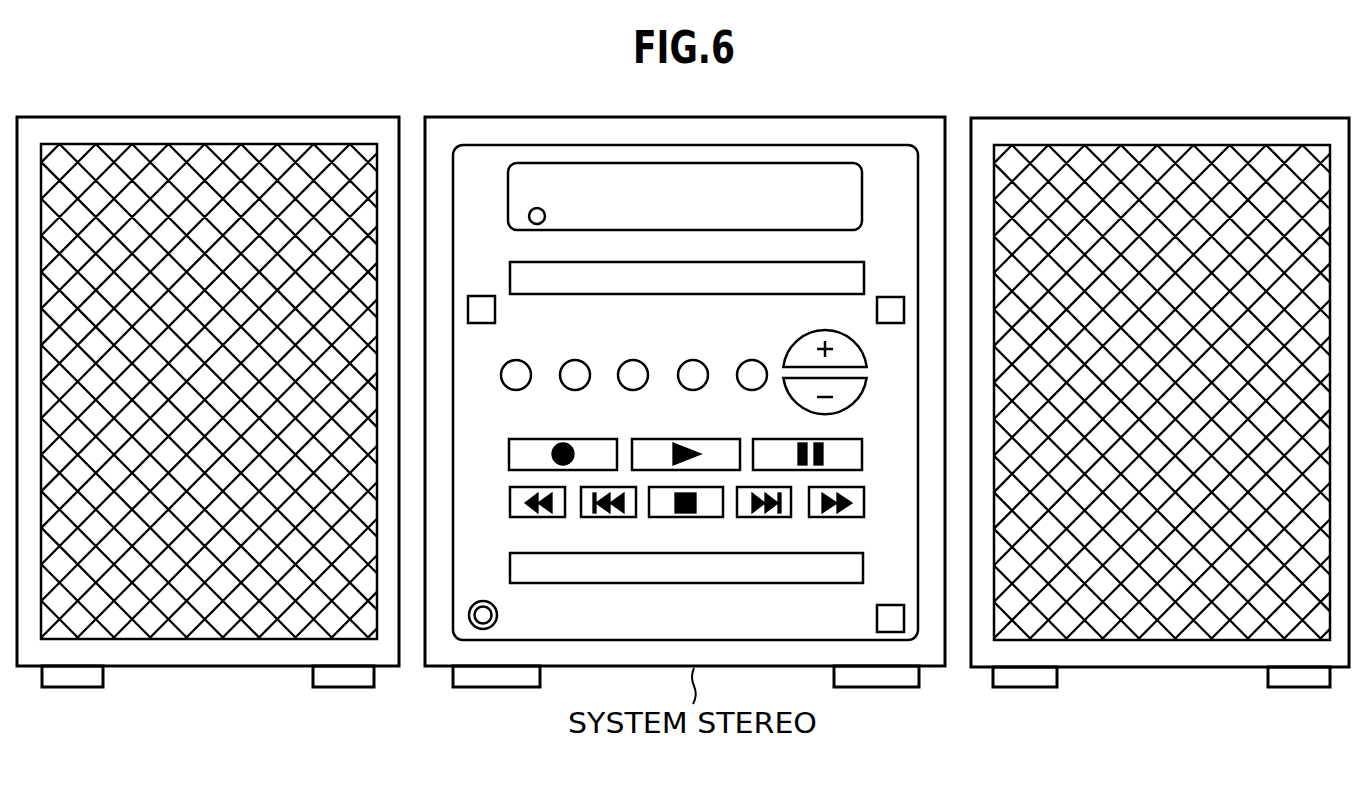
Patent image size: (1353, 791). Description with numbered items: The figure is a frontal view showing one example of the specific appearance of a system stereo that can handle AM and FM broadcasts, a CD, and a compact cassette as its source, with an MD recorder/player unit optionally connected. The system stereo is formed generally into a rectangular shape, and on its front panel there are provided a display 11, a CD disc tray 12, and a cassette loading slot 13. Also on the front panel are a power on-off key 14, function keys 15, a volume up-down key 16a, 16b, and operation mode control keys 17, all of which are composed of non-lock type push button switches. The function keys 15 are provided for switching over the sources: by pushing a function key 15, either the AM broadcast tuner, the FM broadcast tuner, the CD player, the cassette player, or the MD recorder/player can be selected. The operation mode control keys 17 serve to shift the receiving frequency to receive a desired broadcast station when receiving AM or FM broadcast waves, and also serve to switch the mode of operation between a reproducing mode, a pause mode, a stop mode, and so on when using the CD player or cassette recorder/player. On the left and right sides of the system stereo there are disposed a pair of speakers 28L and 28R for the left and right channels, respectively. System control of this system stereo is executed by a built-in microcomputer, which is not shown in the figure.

The display 11 is at (863, 192).
The CD disc tray 12 is at (762, 294).
The cassette loading slot 13 is at (688, 584).
The power on-off key 14 is at (481, 296).
The function keys 15 is at (522, 388).
The volume up-down key 16a is at (852, 337).
The volume up-down key 16b is at (858, 398).
The operation mode control keys 17 is at (509, 445).
The speaker 28L is at (132, 667).
The speaker 28R is at (1087, 668).